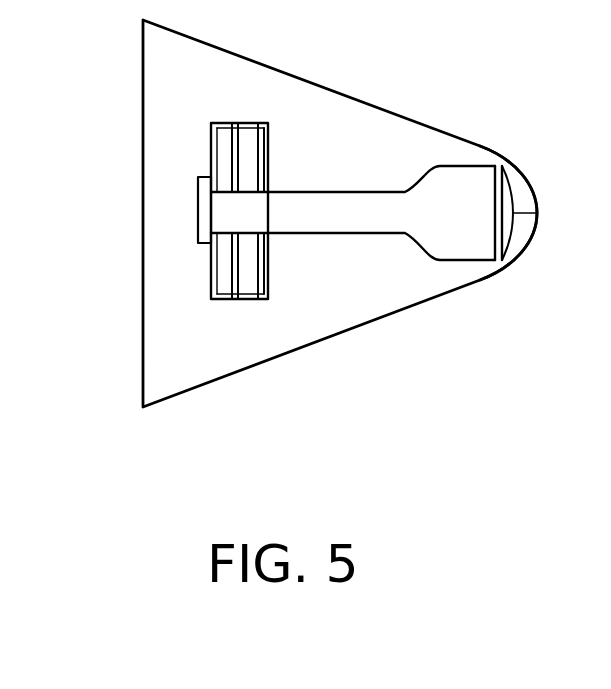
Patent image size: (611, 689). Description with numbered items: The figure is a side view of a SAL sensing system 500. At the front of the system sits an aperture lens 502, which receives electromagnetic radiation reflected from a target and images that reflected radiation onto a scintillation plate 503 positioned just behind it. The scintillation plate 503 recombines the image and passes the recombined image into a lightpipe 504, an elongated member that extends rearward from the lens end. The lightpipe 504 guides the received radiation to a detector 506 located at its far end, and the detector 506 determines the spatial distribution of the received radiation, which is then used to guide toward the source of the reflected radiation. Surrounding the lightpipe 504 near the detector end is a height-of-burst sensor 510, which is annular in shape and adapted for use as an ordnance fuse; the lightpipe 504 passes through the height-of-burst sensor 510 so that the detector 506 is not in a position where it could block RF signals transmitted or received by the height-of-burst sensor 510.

The sensing system 500 is at (363, 445).
The aperture lens 502 is at (537, 212).
The scintillation plate 503 is at (496, 163).
The lightpipe 504 is at (393, 192).
The detector 506 is at (203, 209).
The height-of-burst sensor 510 is at (211, 293).